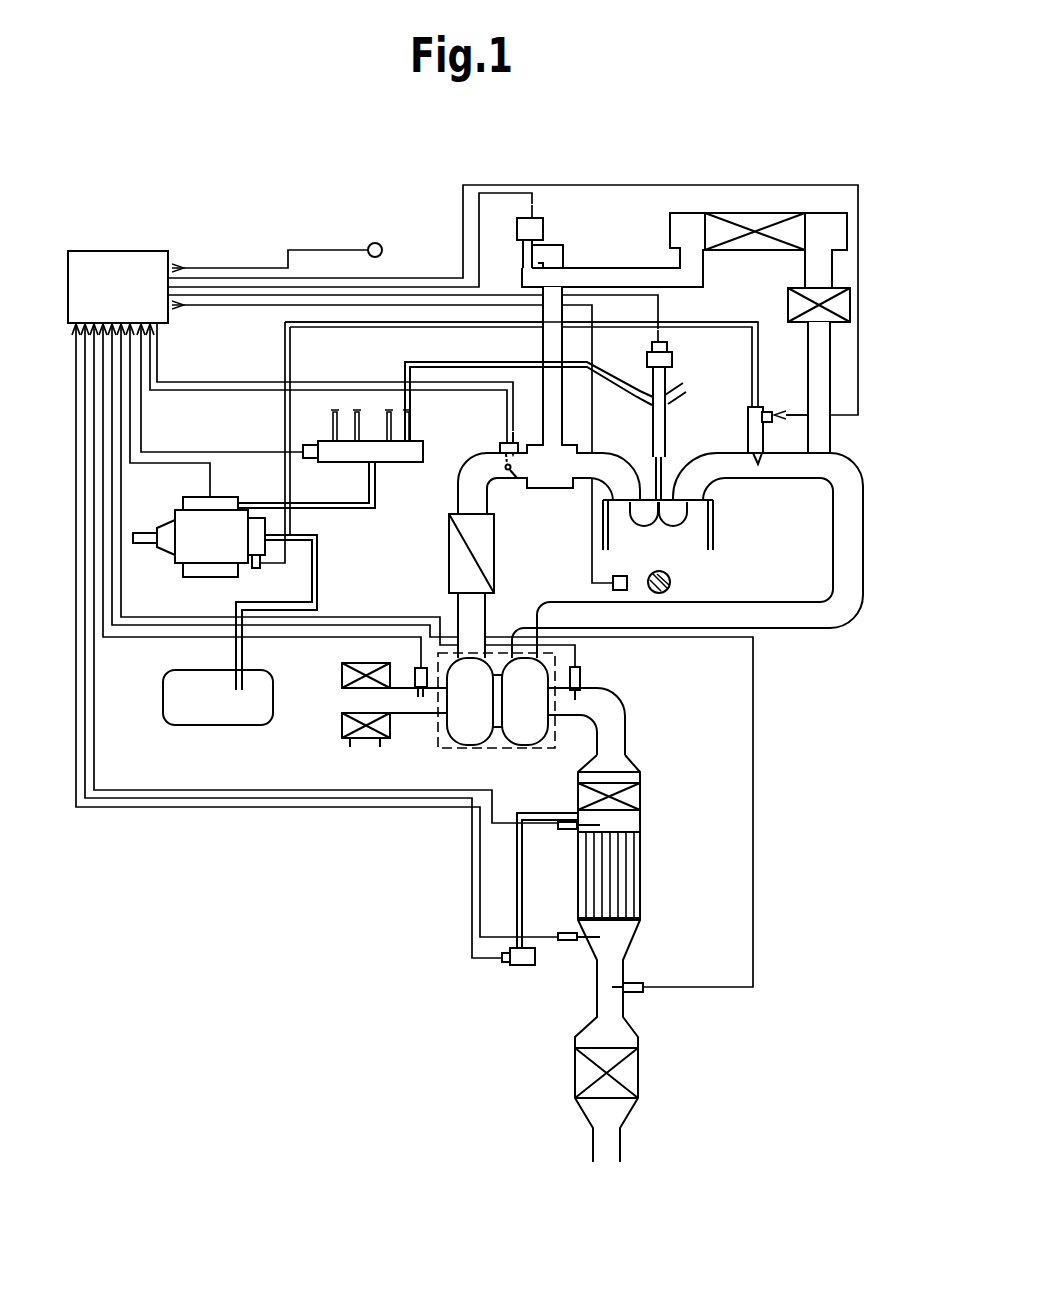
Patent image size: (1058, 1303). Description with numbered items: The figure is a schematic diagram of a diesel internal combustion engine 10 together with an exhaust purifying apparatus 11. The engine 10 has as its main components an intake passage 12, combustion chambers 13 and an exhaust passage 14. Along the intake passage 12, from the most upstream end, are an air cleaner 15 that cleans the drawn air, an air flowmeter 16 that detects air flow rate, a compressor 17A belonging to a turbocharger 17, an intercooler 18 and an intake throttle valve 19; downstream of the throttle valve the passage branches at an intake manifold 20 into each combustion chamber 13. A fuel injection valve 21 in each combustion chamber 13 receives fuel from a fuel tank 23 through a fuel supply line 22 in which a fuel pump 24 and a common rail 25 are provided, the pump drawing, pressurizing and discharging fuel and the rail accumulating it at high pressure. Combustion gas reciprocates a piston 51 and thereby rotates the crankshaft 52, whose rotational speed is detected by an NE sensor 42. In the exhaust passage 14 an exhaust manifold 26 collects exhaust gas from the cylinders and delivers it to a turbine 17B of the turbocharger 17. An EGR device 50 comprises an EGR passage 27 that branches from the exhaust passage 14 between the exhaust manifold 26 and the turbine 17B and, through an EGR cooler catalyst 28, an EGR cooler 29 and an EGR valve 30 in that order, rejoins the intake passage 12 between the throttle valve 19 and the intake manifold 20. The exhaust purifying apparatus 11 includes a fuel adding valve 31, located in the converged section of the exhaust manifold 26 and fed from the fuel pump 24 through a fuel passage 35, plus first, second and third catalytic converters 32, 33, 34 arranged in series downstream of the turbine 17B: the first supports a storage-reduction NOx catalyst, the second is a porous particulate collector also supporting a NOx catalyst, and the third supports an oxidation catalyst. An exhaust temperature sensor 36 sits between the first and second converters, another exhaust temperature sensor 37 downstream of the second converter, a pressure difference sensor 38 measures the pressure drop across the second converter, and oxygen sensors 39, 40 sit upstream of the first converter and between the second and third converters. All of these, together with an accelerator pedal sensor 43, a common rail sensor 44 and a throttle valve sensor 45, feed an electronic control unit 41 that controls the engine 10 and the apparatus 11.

The internal combustion engine 10 is at (767, 635).
The exhaust purifying apparatus 11 is at (648, 748).
The intake passage 12 is at (456, 490).
The combustion chamber 13 is at (673, 520).
The exhaust passage 14 is at (832, 549).
The air cleaner 15 is at (342, 726).
The air flowmeter 16 is at (414, 670).
The turbocharger 17 is at (438, 742).
The compressor 17A is at (470, 742).
The turbine 17B is at (525, 742).
The intercooler 18 is at (449, 567).
The intake throttle valve 19 is at (519, 481).
The intake manifold 20 is at (627, 442).
The fuel injection valve 21 is at (653, 383).
The fuel supply line 22 is at (343, 510).
The fuel tank 23 is at (163, 699).
The fuel pump 24 is at (187, 553).
The common rail 25 is at (420, 440).
The exhaust manifold 26 is at (710, 457).
The EGR passage 27 is at (627, 267).
The EGR cooler catalyst 28 is at (786, 303).
The EGR cooler 29 is at (737, 243).
The EGR valve 30 is at (545, 229).
The fuel adding valve 31 is at (748, 415).
The first catalytic converter 32 is at (642, 794).
The second catalytic converter 33 is at (633, 872).
The third catalytic converter 34 is at (640, 1074).
The fuel passage 35 is at (343, 329).
The exhaust temperature sensor 36 is at (562, 830).
The exhaust temperature sensor 37 is at (568, 941).
The pressure difference sensor 38 is at (518, 967).
The oxygen sensor 39 is at (582, 678).
The oxygen sensor 40 is at (645, 981).
The electronic control unit 41 is at (118, 250).
The NE sensor 42 is at (592, 586).
The accelerator pedal sensor 43 is at (382, 250).
The common rail sensor 44 is at (308, 459).
The throttle valve sensor 45 is at (500, 448).
The exhaust gas recirculation (EGR) device 50 is at (713, 167).
The piston 51 is at (715, 517).
The crankshaft 52 is at (671, 584).